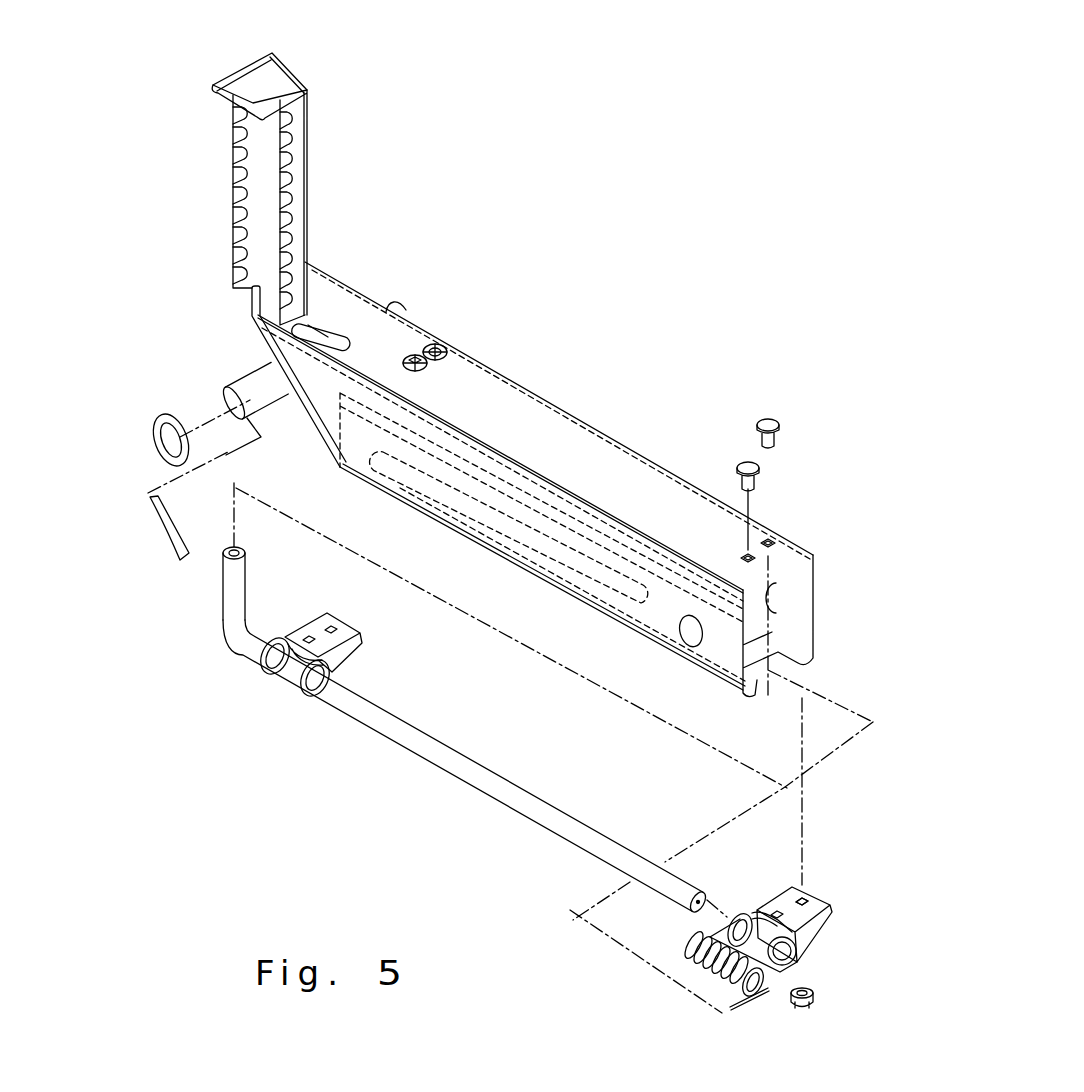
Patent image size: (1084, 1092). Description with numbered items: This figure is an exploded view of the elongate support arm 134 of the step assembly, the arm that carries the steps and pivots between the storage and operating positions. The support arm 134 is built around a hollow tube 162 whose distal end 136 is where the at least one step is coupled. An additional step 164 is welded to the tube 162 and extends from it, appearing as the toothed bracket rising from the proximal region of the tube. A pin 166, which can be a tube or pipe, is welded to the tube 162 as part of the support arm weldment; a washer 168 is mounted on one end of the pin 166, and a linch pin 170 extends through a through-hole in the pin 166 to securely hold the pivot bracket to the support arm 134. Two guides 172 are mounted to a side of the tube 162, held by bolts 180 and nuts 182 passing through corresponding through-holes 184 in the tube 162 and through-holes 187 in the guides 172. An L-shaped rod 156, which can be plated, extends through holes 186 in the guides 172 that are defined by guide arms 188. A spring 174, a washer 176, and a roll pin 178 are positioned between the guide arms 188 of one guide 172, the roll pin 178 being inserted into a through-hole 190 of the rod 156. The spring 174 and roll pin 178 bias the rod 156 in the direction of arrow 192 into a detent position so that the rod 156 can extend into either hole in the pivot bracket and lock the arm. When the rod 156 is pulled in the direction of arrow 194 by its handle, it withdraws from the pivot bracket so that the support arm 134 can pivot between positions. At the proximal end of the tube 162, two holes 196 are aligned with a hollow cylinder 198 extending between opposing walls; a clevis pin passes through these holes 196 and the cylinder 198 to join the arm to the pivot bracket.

The elongate support arm 134 is at (613, 292).
The distal end 136 is at (258, 325).
The L-shaped rod 156 is at (387, 725).
The hollow tube 162 is at (623, 452).
The additional step 164 is at (280, 75).
The pin 166 is at (247, 388).
The washer 168 is at (160, 410).
The linch pin 170 is at (170, 522).
The guides 172 is at (353, 645).
The spring 174 is at (695, 955).
The washer 176 is at (770, 988).
The roll pin 178 is at (748, 1000).
The bolts 180 is at (443, 358).
The nuts 182 is at (812, 1006).
The through-holes 184 is at (437, 348).
The holes 186 is at (746, 913).
The through-holes 187 is at (802, 895).
The guide arms 188 is at (308, 695).
The through-hole 190 is at (637, 877).
The arrow 192 is at (689, 1017).
The arrow 194 is at (500, 837).
The holes 196 is at (777, 600).
The hollow cylinder 198 is at (747, 625).